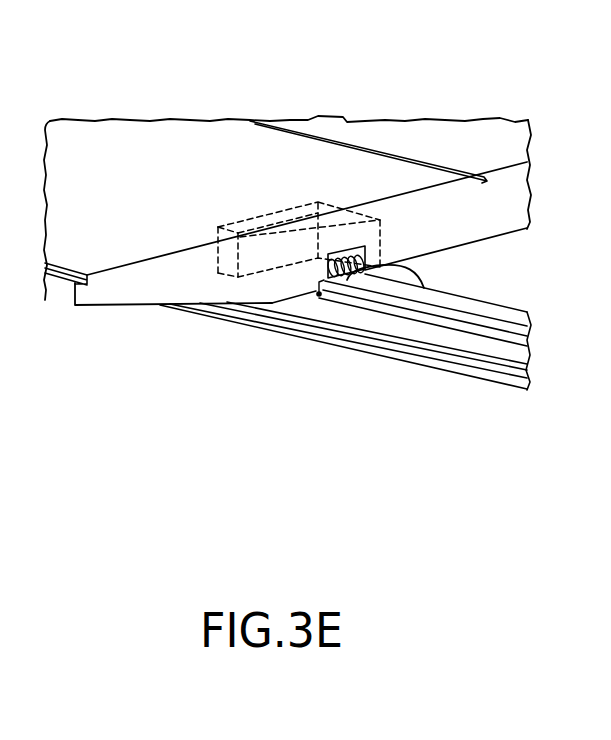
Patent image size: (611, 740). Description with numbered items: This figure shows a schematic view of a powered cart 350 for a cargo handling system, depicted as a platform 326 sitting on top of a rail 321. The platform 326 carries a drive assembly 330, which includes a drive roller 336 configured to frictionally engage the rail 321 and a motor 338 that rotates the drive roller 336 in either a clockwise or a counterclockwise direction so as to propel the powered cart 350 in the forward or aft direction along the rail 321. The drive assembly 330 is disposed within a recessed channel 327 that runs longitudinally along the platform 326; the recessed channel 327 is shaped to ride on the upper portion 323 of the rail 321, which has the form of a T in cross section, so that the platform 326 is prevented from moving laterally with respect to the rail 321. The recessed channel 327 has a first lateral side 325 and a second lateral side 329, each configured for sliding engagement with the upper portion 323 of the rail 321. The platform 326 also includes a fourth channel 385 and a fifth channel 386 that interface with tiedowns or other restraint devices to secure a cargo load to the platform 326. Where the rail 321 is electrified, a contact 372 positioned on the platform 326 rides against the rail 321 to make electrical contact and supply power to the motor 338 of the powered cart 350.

The powered cart 350 is at (130, 84).
The platform 326 is at (378, 127).
The fourth channel 385 is at (443, 163).
The motor 338 is at (267, 215).
The recessed channel 327 is at (365, 246).
The drive roller 336 is at (346, 280).
The contact 372 is at (319, 294).
The first lateral side 325 is at (323, 277).
The drive assembly 330 is at (262, 274).
The fifth channel 386 is at (62, 283).
The upper portion of the rail 323 is at (507, 313).
The rail 321 is at (415, 358).
The second lateral side 329 is at (424, 288).